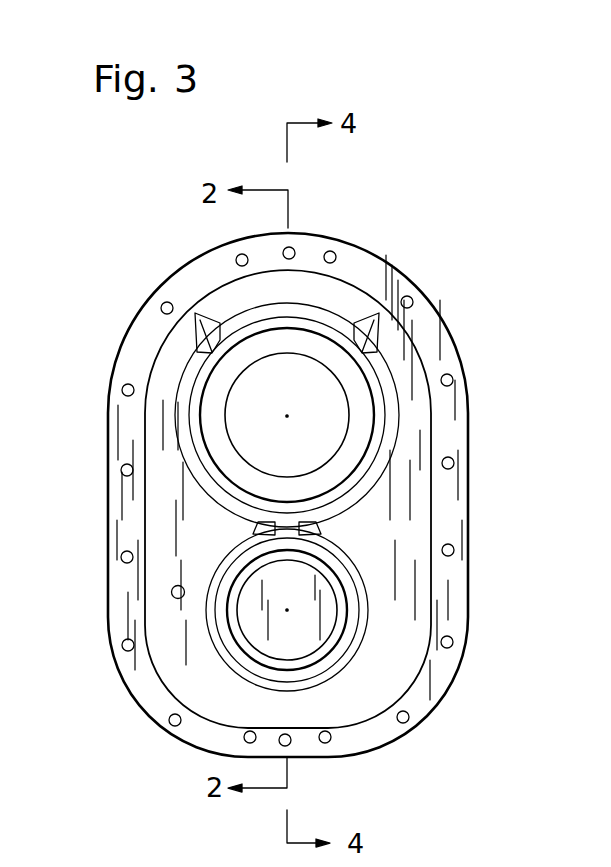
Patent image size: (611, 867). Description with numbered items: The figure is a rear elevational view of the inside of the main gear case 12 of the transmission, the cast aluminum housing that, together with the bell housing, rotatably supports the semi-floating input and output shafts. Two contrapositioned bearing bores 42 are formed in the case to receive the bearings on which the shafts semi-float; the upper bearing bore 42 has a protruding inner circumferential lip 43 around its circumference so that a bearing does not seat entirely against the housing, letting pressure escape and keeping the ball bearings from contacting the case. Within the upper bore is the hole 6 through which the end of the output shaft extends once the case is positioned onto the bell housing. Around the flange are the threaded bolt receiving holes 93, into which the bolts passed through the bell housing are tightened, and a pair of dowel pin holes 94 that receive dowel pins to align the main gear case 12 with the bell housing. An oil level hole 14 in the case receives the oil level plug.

The hole 6 is at (293, 397).
The main gear case 12 is at (188, 224).
The oil level hole 14 is at (171, 592).
The bearing bore 42 is at (378, 418).
The protruding inner circumferential lip 43 is at (353, 453).
The threaded bolt receiving holes 93 is at (448, 375).
The dowel pin holes 94 is at (292, 249).